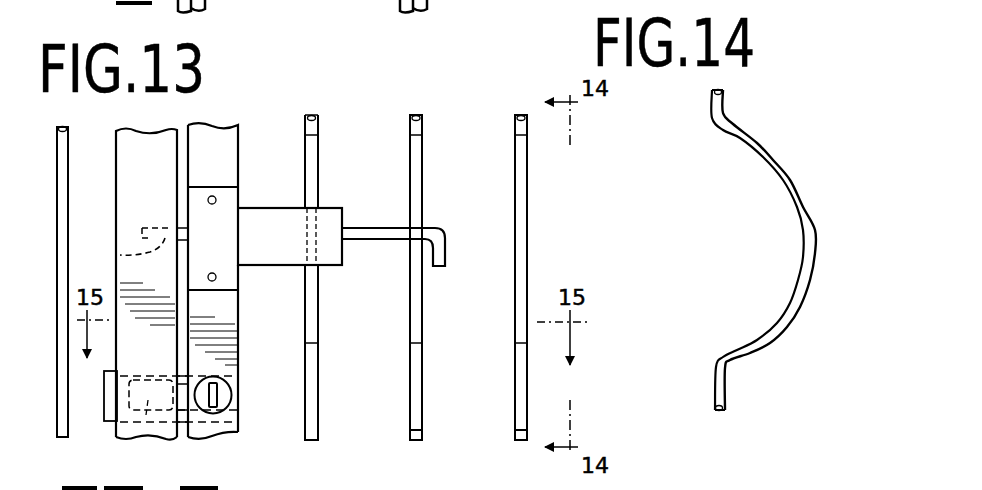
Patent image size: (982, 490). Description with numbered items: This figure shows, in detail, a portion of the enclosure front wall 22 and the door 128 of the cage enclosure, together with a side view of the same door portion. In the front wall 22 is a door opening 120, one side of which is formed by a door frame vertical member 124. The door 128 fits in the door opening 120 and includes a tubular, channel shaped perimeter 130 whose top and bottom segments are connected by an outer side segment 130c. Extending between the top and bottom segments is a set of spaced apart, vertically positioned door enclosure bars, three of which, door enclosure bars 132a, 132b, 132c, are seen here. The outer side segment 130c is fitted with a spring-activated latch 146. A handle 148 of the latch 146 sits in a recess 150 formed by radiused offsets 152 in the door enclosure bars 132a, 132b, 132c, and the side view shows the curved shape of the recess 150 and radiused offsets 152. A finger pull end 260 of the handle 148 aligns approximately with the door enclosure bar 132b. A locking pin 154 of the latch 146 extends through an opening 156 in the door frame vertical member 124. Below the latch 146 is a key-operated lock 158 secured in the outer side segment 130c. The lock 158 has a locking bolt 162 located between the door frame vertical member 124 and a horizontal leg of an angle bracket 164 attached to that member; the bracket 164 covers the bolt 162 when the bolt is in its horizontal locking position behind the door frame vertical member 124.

In FIG. 13, the enclosure front wall 22 is at (216, 118).
In FIG. 13, the door opening 120 is at (192, 122).
In FIG. 13, the door frame vertical member 124 is at (140, 203).
In FIG. 13, the door 128 is at (416, 115).
In FIG. 13, the tubular, channel shaped perimeter 130 is at (240, 432).
In FIG. 13, the outer side segment 130c is at (215, 155).
In FIG. 13, the door enclosure bar 132a is at (318, 436).
In FIG. 13, the door enclosure bar 132b is at (422, 436).
In FIG. 13, the door enclosure bar 132c is at (515, 436).
In FIG. 14, the door enclosure bar 132c is at (724, 386).
In FIG. 13, the spring-activated latch 146 is at (322, 215).
In FIG. 13, the handle 148 is at (412, 233).
In FIG. 13, the recess 150 is at (500, 230).
In FIG. 14, the recess 150 is at (770, 269).
In FIG. 13, the radiused offsets 152 is at (312, 310).
In FIG. 14, the radiused offsets 152 is at (778, 168).
In FIG. 13, the locking pin 154 is at (120, 256).
In FIG. 13, the opening 156 is at (151, 228).
In FIG. 13, the key-operated lock 158 is at (220, 405).
In FIG. 13, the locking bolt 162 is at (146, 434).
In FIG. 13, the angle bracket 164 is at (104, 390).
In FIG. 13, the finger pull end 260 is at (437, 253).